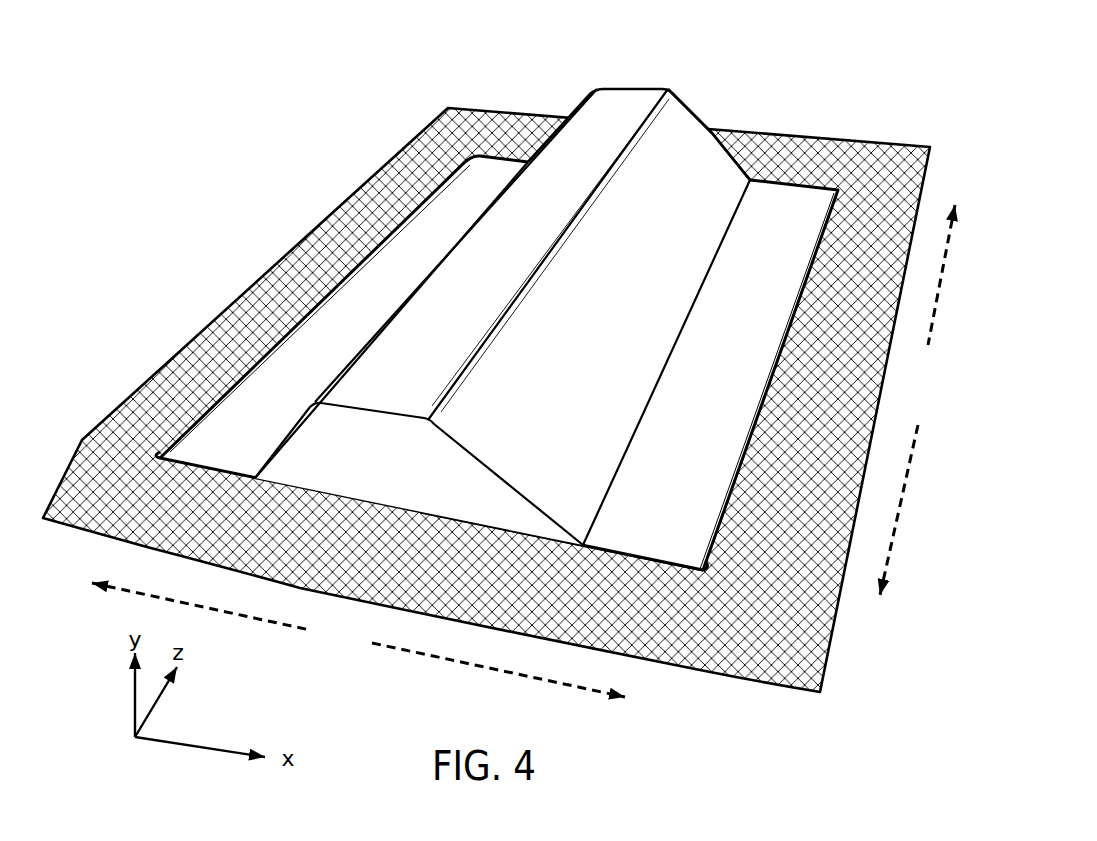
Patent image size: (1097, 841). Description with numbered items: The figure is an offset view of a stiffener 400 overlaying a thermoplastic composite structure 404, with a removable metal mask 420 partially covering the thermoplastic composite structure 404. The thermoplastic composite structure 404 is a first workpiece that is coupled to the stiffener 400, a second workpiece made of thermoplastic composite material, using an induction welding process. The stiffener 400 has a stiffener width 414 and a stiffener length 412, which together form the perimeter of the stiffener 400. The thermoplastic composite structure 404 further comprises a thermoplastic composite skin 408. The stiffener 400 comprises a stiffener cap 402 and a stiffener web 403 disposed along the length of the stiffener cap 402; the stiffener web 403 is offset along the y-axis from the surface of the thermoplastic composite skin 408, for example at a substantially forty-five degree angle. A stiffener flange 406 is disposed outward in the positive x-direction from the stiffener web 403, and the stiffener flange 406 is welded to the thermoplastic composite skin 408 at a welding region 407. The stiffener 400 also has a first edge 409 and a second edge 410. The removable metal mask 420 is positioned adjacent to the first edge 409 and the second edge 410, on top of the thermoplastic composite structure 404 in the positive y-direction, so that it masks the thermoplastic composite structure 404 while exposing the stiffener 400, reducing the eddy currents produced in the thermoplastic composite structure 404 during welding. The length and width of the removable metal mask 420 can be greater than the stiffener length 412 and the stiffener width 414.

The stiffener 400 is at (486, 373).
The stiffener cap 402 is at (620, 98).
The stiffener web 403 is at (707, 139).
The thermoplastic composite structure 404 is at (836, 638).
The stiffener flange 406 is at (260, 465).
The welding region 407 is at (630, 552).
The thermoplastic composite skin 408 is at (438, 505).
The first edge 409 is at (208, 472).
The second edge 410 is at (495, 162).
The stiffener length 412 is at (917, 400).
The stiffener width 414 is at (358, 640).
The removable metal mask 420 is at (248, 312).